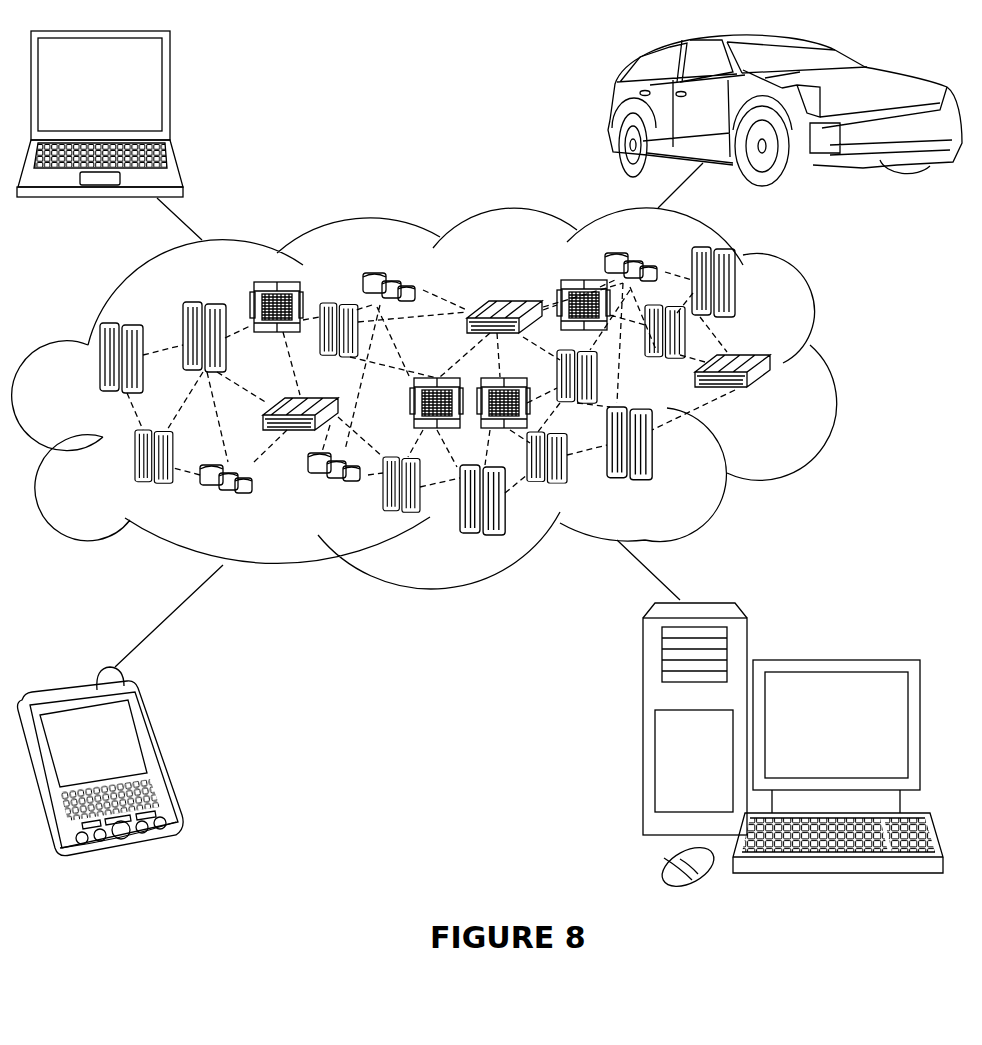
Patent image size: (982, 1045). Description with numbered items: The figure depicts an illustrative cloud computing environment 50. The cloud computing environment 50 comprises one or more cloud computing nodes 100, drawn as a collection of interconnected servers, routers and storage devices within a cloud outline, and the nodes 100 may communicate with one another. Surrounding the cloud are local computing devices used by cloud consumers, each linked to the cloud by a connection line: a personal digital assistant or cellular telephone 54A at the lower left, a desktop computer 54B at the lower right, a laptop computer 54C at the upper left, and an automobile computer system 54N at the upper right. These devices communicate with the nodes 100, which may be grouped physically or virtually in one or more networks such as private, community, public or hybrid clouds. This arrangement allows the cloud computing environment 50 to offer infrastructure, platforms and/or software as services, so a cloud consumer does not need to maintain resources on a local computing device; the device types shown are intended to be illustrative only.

The laptop computer 54C is at (170, 97).
The automobile computer system 54N is at (612, 110).
The personal digital assistant (PDA) or cellular telephone 54A is at (160, 753).
The desktop computer 54B is at (833, 660).
The cloud computing environment 50 is at (835, 370).
The cloud computing nodes 100 is at (782, 401).